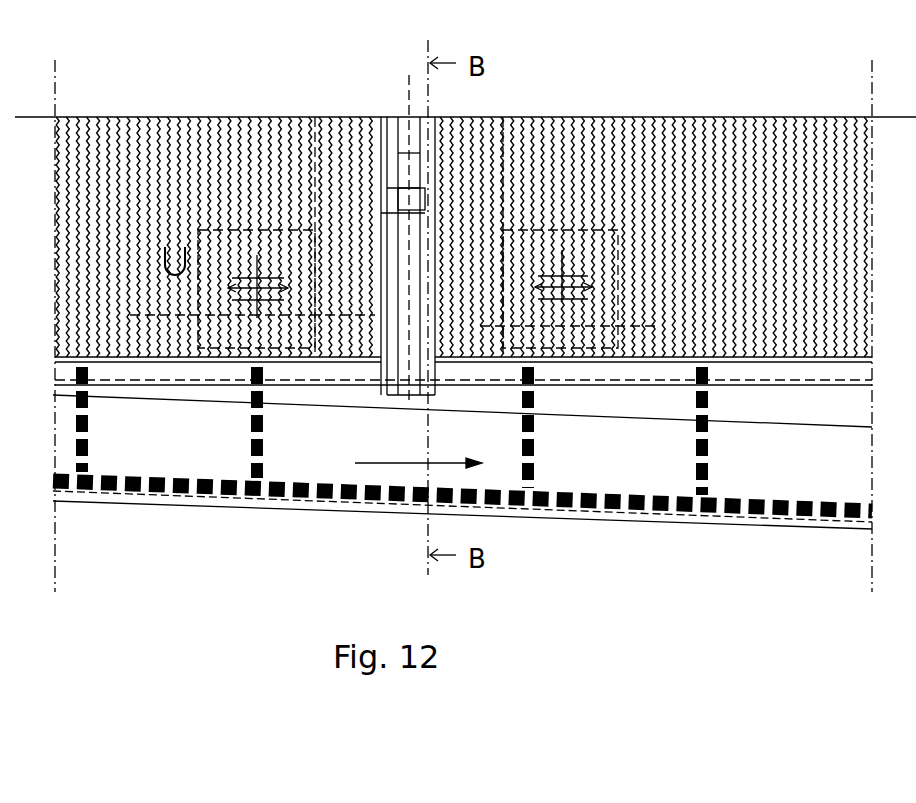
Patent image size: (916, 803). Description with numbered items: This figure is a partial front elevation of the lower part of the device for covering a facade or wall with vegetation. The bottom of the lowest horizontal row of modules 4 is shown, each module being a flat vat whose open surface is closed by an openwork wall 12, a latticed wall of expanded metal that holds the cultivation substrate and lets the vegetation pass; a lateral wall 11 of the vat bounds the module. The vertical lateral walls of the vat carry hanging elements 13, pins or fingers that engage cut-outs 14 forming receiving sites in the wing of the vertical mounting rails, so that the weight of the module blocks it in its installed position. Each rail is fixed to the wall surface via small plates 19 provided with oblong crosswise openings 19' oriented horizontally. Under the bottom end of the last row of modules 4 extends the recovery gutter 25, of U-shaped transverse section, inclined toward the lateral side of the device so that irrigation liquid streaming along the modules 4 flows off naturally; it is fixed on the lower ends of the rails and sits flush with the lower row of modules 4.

The module 4 is at (218, 88).
The lateral wall 11 is at (847, 360).
The openwork wall 12 is at (258, 128).
The hanging element 13 is at (395, 190).
The cut-out 14 is at (413, 168).
The small plate 19 is at (585, 416).
The oblong crosswise opening 19' is at (580, 423).
The gutter 25 is at (753, 522).